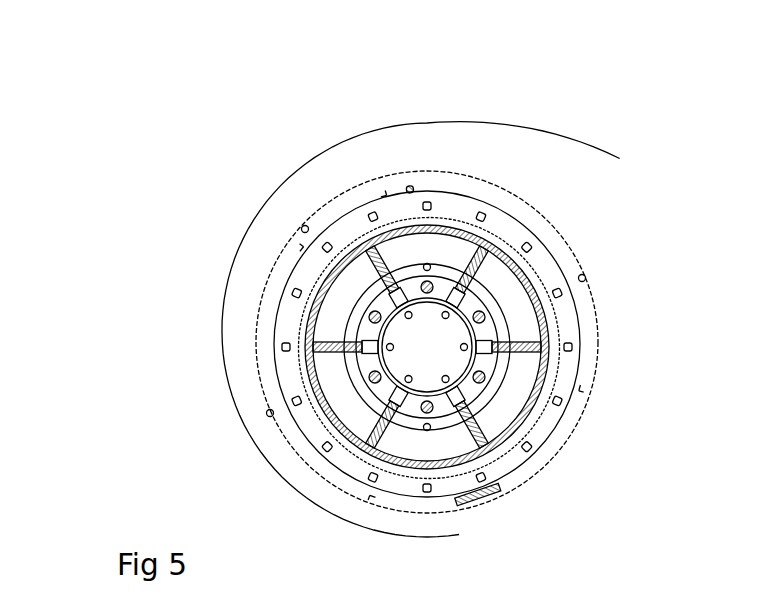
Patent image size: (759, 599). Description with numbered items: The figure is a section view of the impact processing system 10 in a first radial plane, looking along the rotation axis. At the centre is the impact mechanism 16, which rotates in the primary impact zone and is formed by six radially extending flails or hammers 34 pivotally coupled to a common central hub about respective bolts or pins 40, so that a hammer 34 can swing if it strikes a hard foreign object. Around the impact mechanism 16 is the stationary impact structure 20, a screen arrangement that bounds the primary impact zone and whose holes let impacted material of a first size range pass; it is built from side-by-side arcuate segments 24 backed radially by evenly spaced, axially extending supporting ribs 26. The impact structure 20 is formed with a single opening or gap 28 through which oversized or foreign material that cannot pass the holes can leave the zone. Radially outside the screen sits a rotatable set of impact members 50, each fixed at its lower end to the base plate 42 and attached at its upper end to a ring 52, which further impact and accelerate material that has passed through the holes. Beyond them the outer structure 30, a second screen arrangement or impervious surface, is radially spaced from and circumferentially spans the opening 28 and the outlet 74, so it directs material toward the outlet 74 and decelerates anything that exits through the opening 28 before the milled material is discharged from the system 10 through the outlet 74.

The impact processing system 10 is at (232, 148).
The impact mechanism 16 is at (372, 362).
The impact structure 20 is at (343, 448).
The arcuate segments 24 is at (562, 255).
The supporting ribs 26 is at (563, 307).
The opening or gap 28 is at (497, 233).
The outer structure 30 is at (553, 440).
The hammers 34 is at (483, 278).
The bolts or pins 40 is at (300, 318).
The base plate 42 is at (588, 272).
The impact members 50 is at (426, 485).
The ring 52 is at (496, 488).
The outlet 74 is at (637, 185).